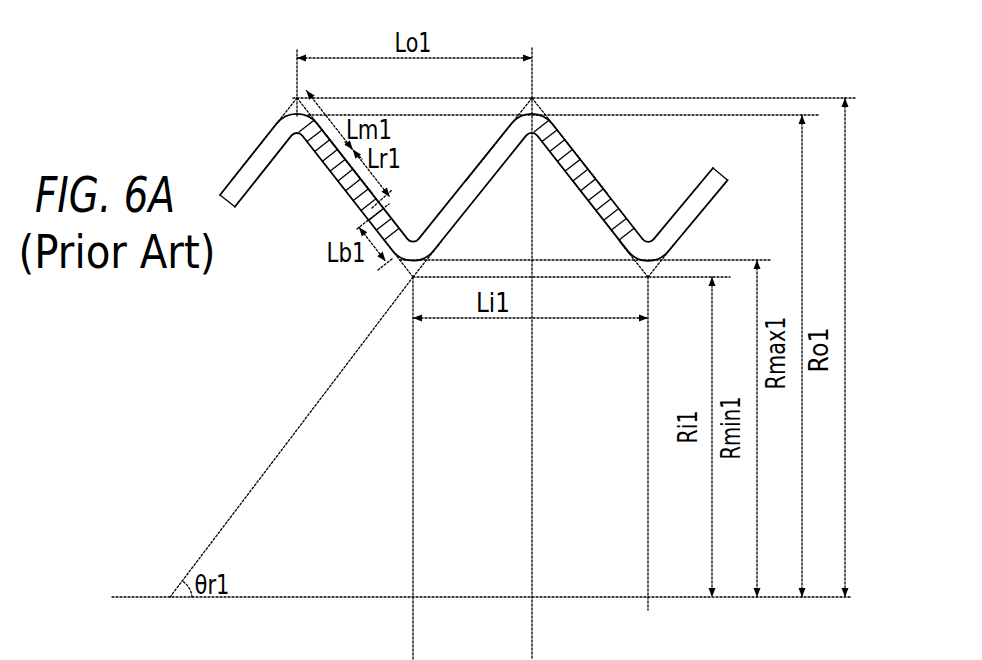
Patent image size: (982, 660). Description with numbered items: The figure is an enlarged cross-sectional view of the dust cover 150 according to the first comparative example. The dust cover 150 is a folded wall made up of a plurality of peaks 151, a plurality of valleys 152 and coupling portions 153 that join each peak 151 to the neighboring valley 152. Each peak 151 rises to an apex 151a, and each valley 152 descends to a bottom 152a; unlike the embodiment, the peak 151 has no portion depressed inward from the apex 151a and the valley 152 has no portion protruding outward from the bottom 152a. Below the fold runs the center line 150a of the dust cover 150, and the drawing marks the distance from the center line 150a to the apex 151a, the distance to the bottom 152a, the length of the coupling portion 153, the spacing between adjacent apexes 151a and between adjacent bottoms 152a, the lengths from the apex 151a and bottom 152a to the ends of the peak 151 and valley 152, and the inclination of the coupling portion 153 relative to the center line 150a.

The dust cover 150 is at (194, 78).
The center line 150a is at (449, 597).
The peak 151 is at (270, 100).
The apex 151a is at (297, 98).
The valley 152 is at (398, 283).
The bottom 152a is at (410, 282).
The coupling portion 153 is at (372, 178).